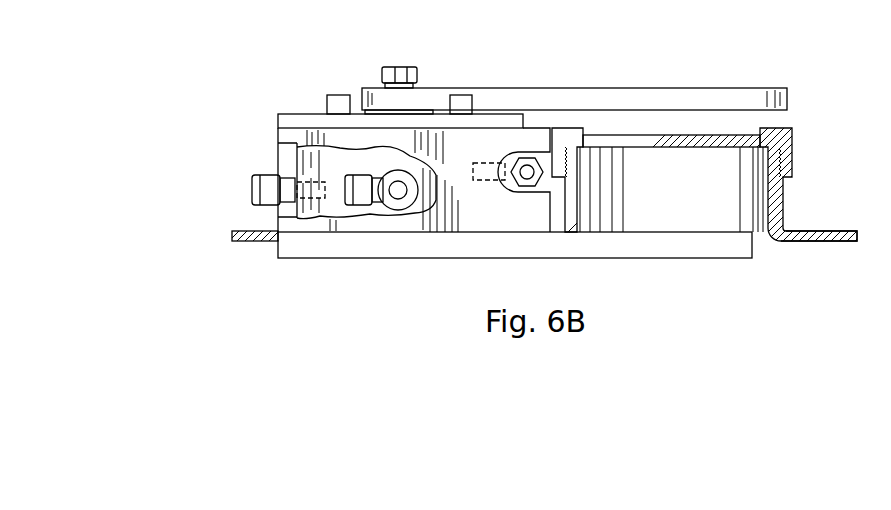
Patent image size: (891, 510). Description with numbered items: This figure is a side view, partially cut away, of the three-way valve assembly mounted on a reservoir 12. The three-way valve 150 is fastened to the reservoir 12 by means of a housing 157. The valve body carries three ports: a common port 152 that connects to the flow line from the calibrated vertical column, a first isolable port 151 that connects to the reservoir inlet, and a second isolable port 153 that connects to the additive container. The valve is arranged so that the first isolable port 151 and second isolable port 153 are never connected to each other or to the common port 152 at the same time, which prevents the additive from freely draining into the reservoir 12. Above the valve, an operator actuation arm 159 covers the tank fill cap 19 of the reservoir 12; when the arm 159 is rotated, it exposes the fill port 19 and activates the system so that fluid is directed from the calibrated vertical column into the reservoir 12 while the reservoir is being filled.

The housing 157 is at (247, 113).
The three-way valve 150 is at (472, 208).
The common port 152 is at (392, 207).
The second isolable port 153 is at (289, 175).
The first isolable port 151 is at (490, 163).
The operator actuation arm 159 is at (693, 88).
The tank fill cap 19 is at (784, 197).
The reservoir 12 is at (820, 231).